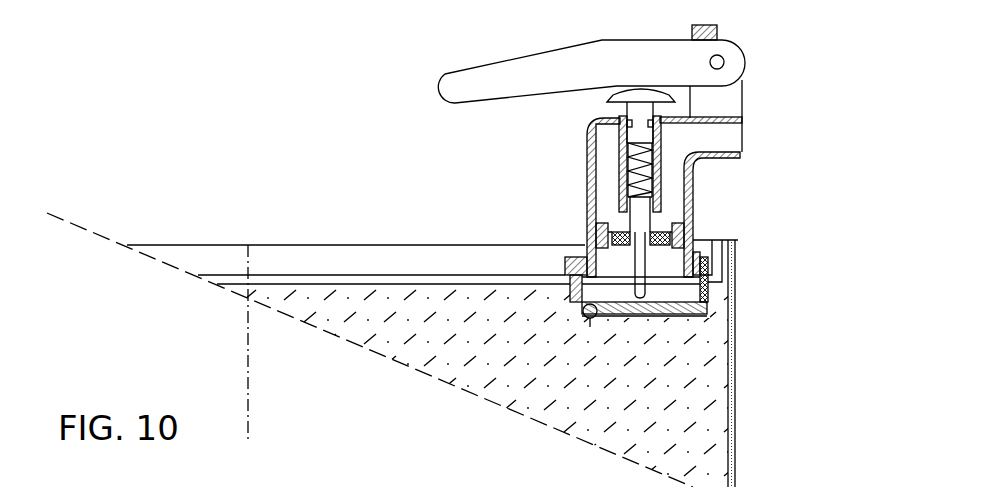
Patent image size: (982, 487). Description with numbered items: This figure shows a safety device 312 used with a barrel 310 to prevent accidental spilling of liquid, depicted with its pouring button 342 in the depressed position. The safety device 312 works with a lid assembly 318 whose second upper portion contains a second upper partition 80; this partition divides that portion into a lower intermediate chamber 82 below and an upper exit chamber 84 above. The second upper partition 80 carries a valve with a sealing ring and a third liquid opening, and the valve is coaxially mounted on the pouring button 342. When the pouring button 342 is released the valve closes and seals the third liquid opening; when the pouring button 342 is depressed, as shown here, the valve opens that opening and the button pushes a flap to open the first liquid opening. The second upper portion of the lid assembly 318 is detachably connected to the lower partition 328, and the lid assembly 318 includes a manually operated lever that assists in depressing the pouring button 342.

The pouring button 342 is at (637, 113).
The lid assembly 318 is at (572, 207).
The upper exit chamber 84 is at (667, 165).
The second upper partition 80 is at (700, 228).
The lower intermediate chamber 82 is at (605, 258).
The safety device 312 is at (743, 262).
The lower partition 328 is at (730, 295).
The barrel 310 is at (740, 358).